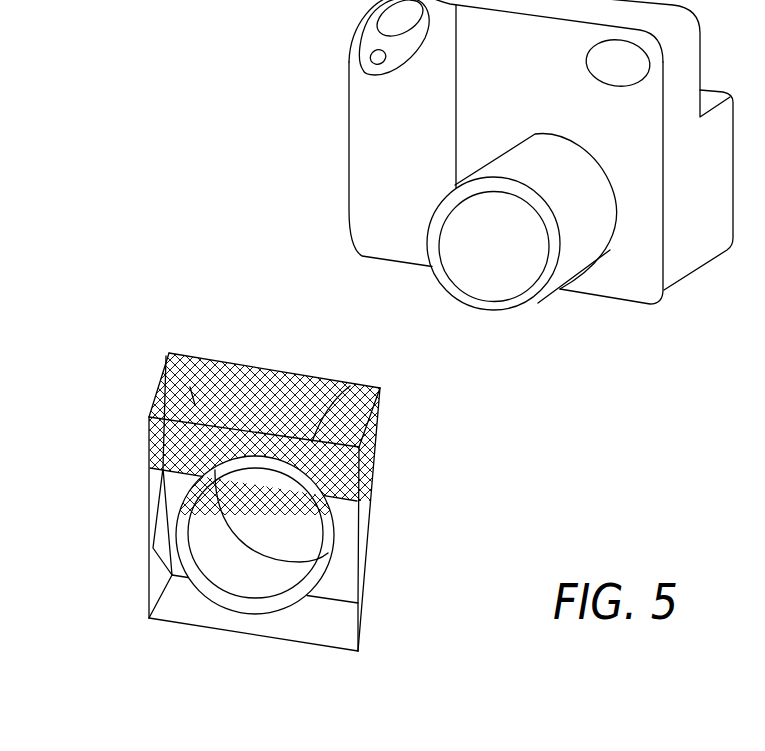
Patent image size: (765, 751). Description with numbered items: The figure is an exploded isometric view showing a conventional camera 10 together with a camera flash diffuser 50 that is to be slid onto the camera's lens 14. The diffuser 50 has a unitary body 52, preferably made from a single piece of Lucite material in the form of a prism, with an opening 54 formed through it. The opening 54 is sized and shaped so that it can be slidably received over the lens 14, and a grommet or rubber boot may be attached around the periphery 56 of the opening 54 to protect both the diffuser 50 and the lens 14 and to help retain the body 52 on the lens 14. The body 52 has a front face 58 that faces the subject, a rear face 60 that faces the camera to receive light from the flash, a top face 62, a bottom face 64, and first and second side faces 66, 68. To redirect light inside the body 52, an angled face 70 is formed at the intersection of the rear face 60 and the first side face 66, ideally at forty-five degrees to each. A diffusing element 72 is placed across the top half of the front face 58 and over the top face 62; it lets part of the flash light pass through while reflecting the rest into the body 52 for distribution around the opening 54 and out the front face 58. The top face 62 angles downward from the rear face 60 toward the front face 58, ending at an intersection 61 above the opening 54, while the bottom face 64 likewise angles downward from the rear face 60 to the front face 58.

The camera 10 is at (480, 193).
The lens 14 is at (573, 225).
The diffuser 50 is at (269, 505).
The unitary body 52 is at (270, 505).
The opening 54 is at (275, 537).
The periphery of the opening 56 is at (205, 520).
The front face 58 is at (335, 587).
The rear face 60 is at (362, 457).
The intersection 61 is at (356, 384).
The top face 62 is at (166, 364).
The bottom face 64 is at (316, 620).
The first side face 66 is at (149, 440).
The second side face 68 is at (363, 570).
The angled face 70 is at (165, 560).
The diffusing element 72 is at (216, 368).